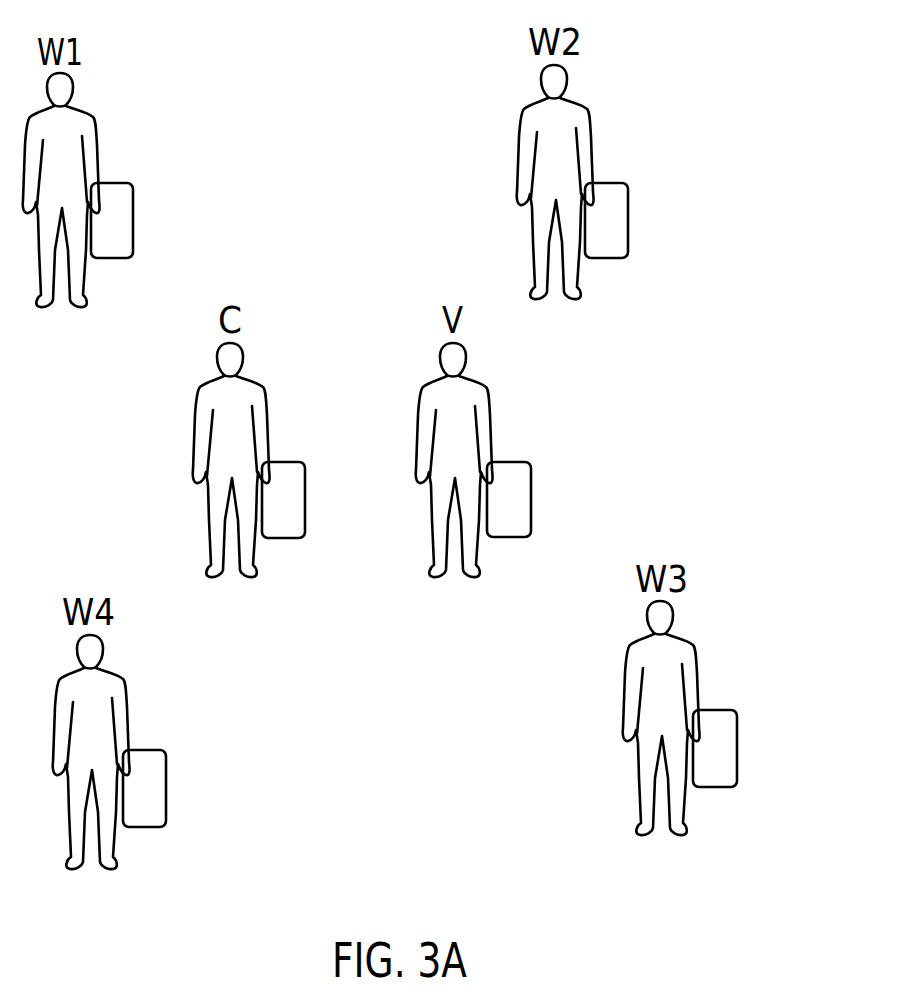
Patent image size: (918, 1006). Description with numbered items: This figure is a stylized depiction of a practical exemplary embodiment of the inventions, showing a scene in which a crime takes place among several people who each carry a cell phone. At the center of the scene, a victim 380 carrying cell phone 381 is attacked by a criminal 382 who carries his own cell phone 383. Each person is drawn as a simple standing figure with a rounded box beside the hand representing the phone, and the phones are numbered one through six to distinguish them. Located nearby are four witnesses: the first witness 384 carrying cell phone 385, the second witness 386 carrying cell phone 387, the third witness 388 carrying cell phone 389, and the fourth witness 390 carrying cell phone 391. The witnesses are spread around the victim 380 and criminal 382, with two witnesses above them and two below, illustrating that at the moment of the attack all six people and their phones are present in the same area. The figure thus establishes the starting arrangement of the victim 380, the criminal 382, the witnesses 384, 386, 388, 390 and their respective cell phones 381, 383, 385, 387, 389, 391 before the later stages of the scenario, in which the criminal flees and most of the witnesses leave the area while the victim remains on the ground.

The victim 380 is at (475, 555).
The cell phone (1) 381 is at (531, 490).
The criminal 382 is at (252, 547).
The cell phone (2) 383 is at (305, 505).
The witness W1 384 is at (82, 268).
The cell phone (3) 385 is at (133, 212).
The witness W2 386 is at (568, 268).
The cell phone (4) 387 is at (628, 205).
The witness W3 388 is at (682, 795).
The cell phone (5) 389 is at (737, 733).
The witness W4 390 is at (110, 837).
The cell phone (6) 391 is at (166, 780).